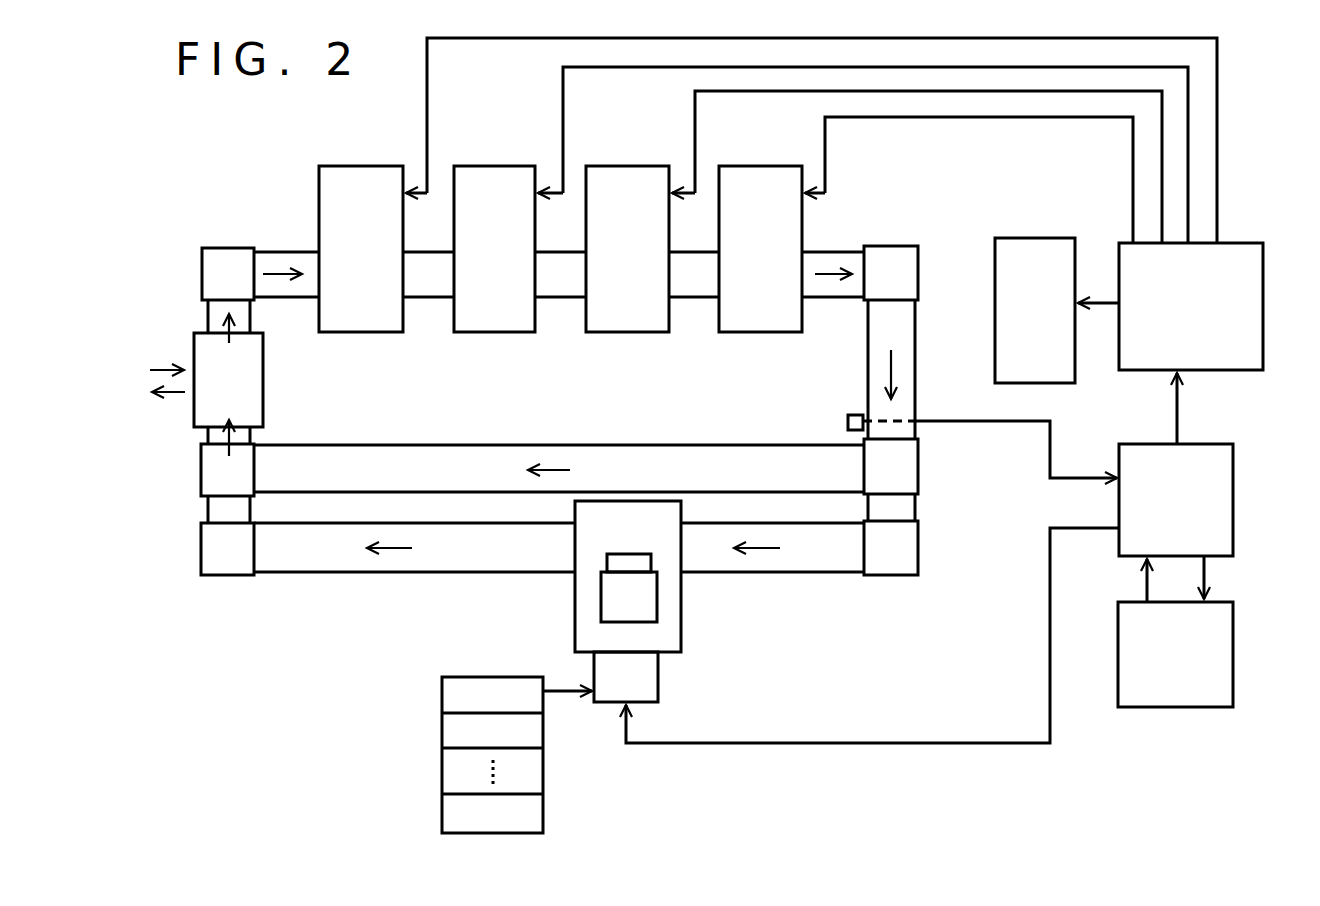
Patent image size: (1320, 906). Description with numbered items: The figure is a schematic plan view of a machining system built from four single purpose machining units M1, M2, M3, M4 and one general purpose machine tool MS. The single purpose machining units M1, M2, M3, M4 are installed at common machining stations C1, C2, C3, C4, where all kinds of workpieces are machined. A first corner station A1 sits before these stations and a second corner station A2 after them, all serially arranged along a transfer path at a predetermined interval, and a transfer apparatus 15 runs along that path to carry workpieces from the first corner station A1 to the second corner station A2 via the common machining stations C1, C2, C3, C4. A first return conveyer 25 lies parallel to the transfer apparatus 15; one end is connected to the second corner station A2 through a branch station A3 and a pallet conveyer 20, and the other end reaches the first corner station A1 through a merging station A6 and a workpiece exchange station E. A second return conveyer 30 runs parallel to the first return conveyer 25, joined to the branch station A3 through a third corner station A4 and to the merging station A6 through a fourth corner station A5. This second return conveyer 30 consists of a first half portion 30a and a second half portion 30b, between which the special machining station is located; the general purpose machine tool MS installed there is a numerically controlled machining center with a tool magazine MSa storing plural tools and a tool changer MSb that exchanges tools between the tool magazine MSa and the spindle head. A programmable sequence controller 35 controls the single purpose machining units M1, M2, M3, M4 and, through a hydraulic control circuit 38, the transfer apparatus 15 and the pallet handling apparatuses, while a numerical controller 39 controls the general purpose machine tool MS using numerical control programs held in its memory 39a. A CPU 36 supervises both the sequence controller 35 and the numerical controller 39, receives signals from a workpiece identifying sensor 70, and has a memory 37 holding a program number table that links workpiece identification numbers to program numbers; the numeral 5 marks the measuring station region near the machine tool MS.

The common machining station C1 is at (361, 250).
The common machining station C2 is at (494, 250).
The common machining station C3 is at (627, 250).
The common machining station C4 is at (760, 250).
The single purpose machining unit M1 is at (384, 333).
The single purpose machining unit M2 is at (509, 333).
The single purpose machining unit M3 is at (642, 333).
The single purpose machining unit M4 is at (769, 333).
The first corner station A1 is at (231, 245).
The second corner station A2 is at (894, 244).
The branch station A3 is at (925, 478).
The third corner station A4 is at (896, 580).
The fourth corner station A5 is at (232, 580).
The merging station A6 is at (199, 470).
The workpiece exchange station E is at (268, 375).
The transfer apparatus 15 is at (838, 258).
The pallet conveyer 20 is at (915, 333).
The first return conveyer 25 is at (646, 462).
The second return conveyer 30 is at (724, 575).
The first half portion 30a is at (815, 558).
The second half portion 30b is at (478, 560).
The workpiece identifying sensor 70 is at (846, 422).
The measuring station 5 is at (615, 598).
The general purpose machine tool MS is at (593, 578).
The tool magazine MSa is at (622, 597).
The tool changer MSb is at (640, 556).
The numerical controller 39 is at (660, 697).
The memory 39a is at (442, 697).
The programmable sequence controller 35 is at (1263, 242).
The CPU 36 is at (1233, 446).
The memory 37 is at (1233, 602).
The hydraulic control circuit 38 is at (1075, 240).